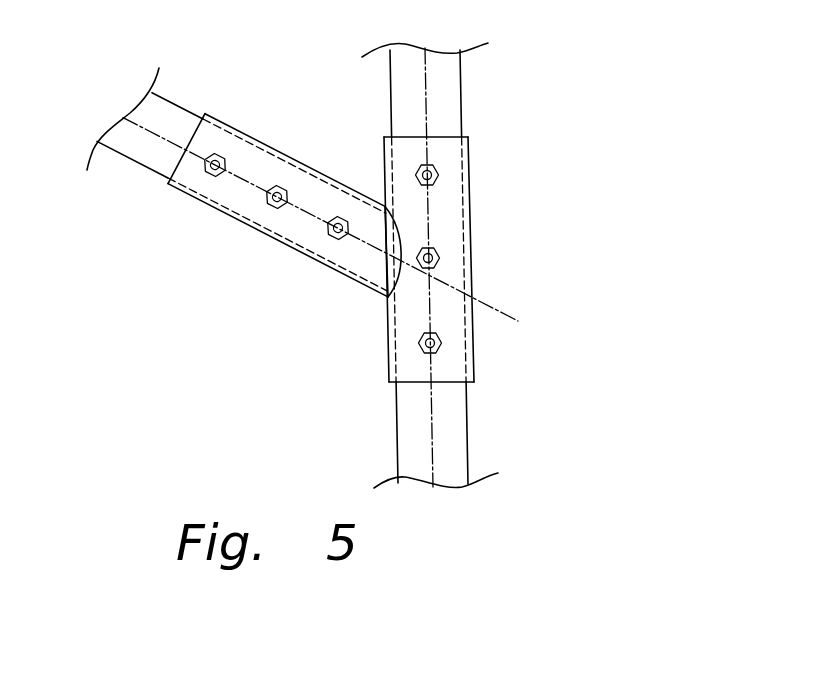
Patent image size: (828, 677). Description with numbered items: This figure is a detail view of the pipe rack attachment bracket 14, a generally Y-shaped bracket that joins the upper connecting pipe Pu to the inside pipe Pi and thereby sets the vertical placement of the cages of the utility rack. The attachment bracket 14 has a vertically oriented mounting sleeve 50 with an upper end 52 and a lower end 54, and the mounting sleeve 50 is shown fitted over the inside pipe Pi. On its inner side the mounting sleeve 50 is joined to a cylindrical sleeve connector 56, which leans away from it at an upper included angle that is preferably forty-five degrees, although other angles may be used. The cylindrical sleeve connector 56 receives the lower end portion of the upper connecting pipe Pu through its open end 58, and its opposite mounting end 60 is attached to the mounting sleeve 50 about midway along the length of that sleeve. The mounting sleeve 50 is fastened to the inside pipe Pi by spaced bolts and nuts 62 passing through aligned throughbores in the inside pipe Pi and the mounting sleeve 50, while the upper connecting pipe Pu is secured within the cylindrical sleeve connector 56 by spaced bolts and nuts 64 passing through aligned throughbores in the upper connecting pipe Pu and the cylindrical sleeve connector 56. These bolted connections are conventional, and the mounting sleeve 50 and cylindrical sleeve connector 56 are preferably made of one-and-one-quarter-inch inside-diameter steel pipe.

The pipe rack attachment bracket 14 is at (471, 176).
The mounting sleeve 50 is at (473, 363).
The upper end 52 is at (444, 137).
The lower end 54 is at (448, 382).
The cylindrical sleeve connector 56 is at (312, 258).
The open end 58 is at (171, 176).
The mounting end 60 is at (400, 256).
The bolts and nuts 62 is at (441, 343).
The bolts and nuts 64 is at (329, 236).
The upper connecting pipe Pu is at (174, 99).
The inside pipe Pi is at (470, 457).